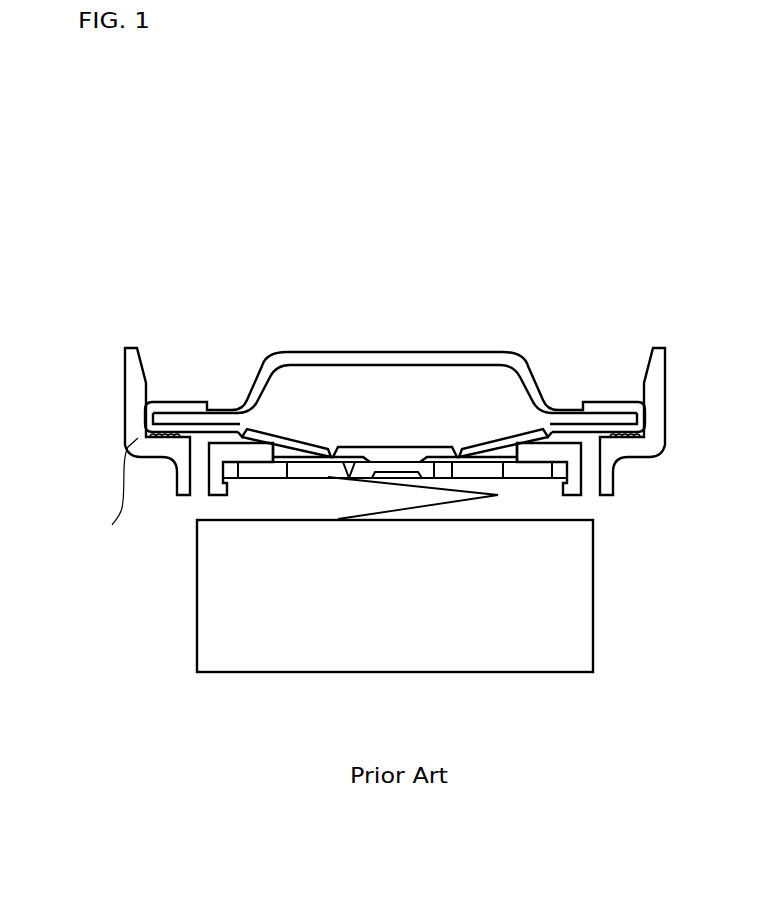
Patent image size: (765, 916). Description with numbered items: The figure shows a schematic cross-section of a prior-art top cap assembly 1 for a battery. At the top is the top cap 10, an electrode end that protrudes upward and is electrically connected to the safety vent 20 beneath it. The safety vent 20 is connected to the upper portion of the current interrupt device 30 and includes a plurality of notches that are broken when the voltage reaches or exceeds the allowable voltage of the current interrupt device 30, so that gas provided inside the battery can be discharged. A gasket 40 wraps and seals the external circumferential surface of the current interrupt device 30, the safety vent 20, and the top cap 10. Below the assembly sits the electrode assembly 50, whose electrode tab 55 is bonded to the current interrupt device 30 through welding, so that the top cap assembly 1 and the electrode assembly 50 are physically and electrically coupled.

The top cap assembly 1 is at (404, 207).
The top cap 10 is at (398, 352).
The safety vent 20 is at (397, 447).
The current interrupt device 30 is at (310, 472).
The gasket 40 is at (209, 472).
The electrode assembly 50 is at (252, 672).
The electrode tab 55 is at (462, 503).